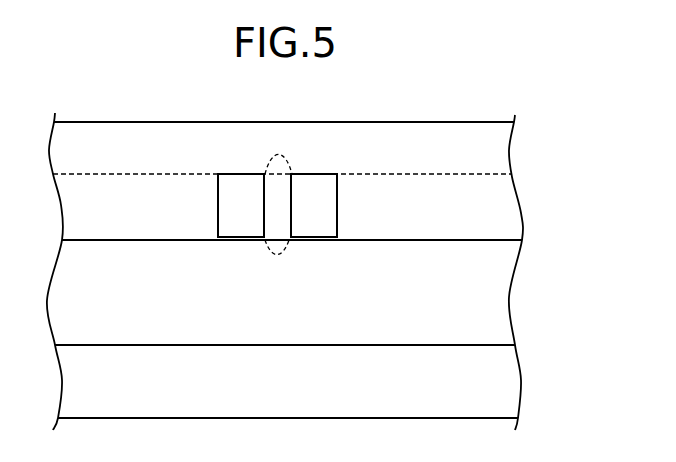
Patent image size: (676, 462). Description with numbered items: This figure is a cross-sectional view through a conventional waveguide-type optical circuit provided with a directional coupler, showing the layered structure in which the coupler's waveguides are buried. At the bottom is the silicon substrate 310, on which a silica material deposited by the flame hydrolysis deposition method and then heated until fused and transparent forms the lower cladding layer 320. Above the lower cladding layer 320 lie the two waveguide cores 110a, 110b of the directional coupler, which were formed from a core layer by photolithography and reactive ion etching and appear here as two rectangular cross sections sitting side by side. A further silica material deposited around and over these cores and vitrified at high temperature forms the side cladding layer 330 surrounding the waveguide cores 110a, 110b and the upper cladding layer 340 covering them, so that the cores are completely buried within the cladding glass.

The upper cladding layer 340 is at (492, 149).
The side cladding layer 330 is at (505, 215).
The lower cladding layer 320 is at (488, 295).
The silicon substrate 310 is at (503, 385).
The waveguide core 110a is at (237, 227).
The waveguide core 110b is at (313, 227).